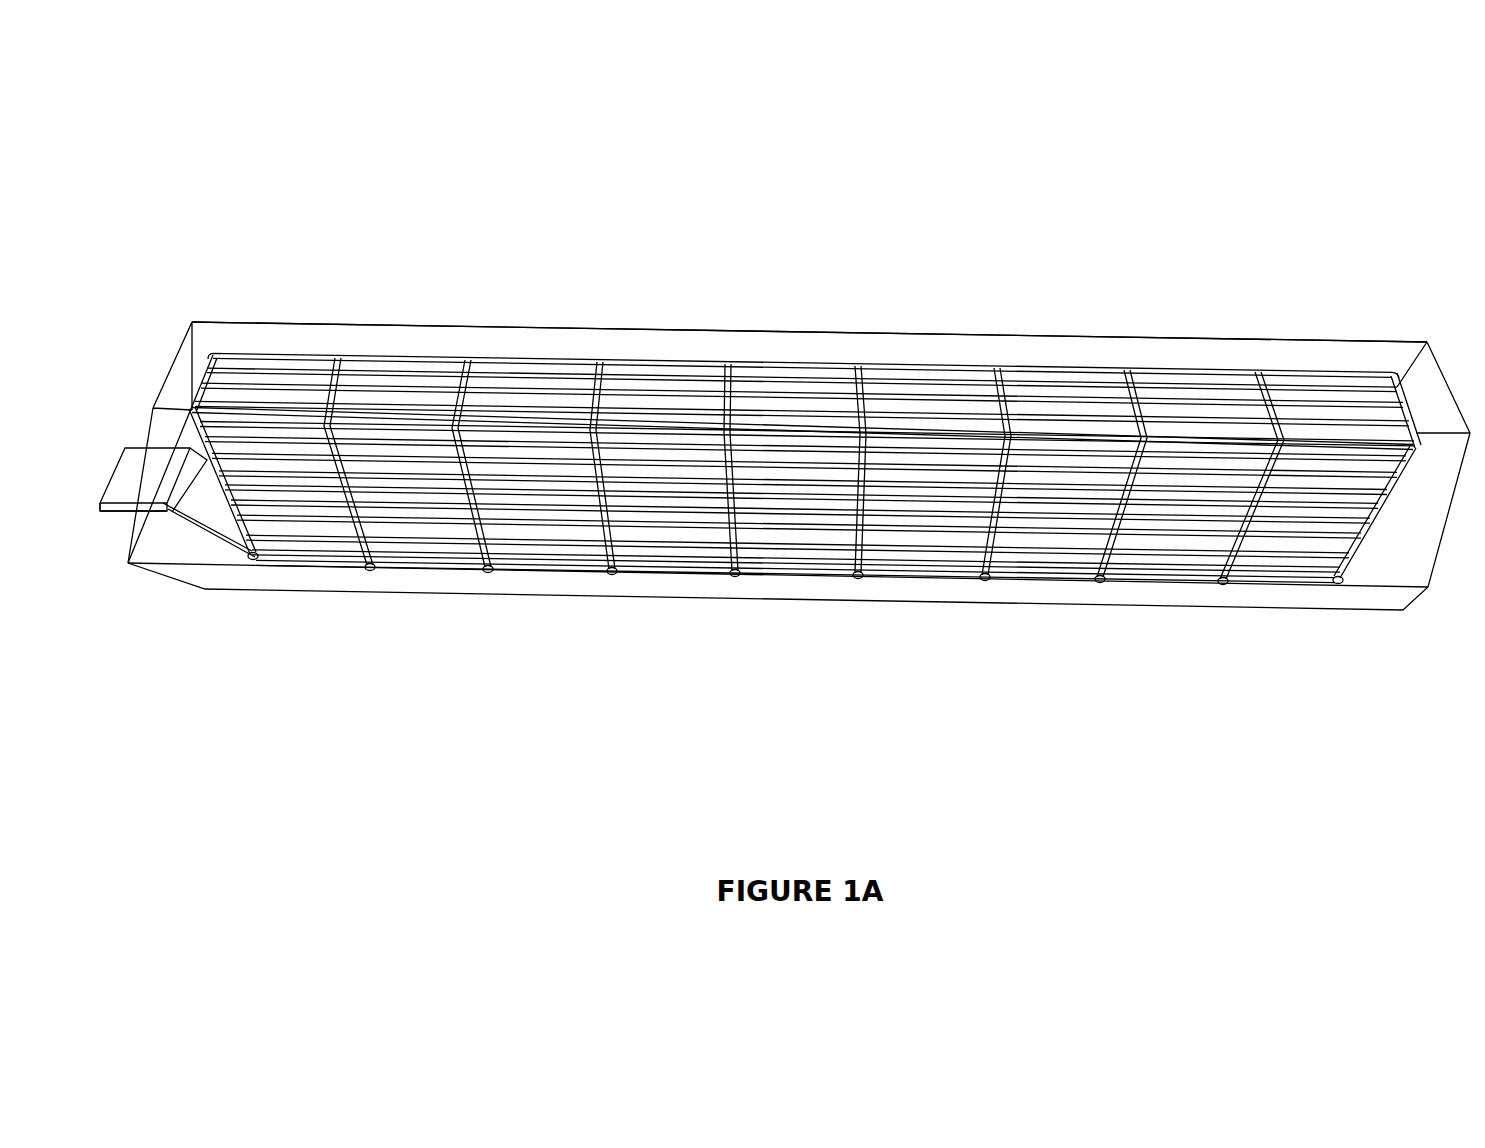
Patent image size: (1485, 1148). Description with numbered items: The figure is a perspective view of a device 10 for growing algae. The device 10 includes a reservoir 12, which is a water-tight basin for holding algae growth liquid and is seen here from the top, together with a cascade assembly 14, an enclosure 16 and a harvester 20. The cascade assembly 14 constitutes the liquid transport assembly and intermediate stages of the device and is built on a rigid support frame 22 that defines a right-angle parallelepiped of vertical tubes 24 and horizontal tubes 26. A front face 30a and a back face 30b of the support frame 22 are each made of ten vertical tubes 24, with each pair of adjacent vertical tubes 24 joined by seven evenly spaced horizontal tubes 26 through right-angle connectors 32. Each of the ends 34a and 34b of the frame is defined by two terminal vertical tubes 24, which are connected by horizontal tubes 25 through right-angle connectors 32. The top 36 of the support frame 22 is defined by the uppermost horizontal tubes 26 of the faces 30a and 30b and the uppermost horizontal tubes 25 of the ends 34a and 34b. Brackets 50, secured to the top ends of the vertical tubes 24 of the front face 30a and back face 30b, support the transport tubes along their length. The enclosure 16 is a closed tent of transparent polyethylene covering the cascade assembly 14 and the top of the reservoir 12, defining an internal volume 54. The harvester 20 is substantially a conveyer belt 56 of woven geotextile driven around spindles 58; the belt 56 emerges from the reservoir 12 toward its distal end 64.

The device 10 is at (217, 195).
The reservoir 12 is at (340, 592).
The cascade assembly 14 is at (667, 349).
The enclosure 16 is at (322, 326).
The harvester 20 is at (113, 512).
The rigid support frame 22 is at (355, 355).
The vertical tubes 24 is at (280, 560).
The horizontal tubes 25 is at (205, 376).
The horizontal tubes 26 is at (1190, 360).
The front face 30a is at (945, 612).
The back face 30b is at (785, 302).
The right-angle connectors 32 is at (603, 378).
The end 34a is at (157, 347).
The end 34b is at (1388, 350).
The top 36 is at (873, 326).
The brackets 50 is at (440, 373).
The internal volume 54 is at (1250, 356).
The conveyer belt 56 is at (124, 448).
The spindles 58 is at (152, 514).
The distal end 64 is at (103, 512).